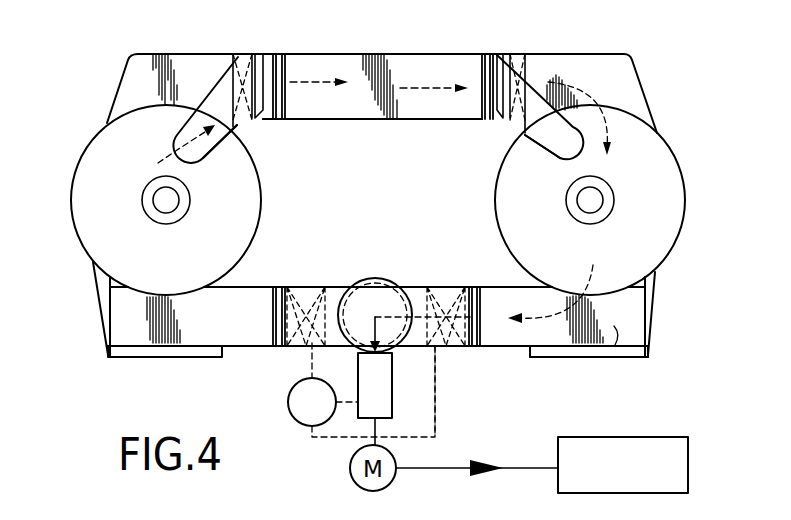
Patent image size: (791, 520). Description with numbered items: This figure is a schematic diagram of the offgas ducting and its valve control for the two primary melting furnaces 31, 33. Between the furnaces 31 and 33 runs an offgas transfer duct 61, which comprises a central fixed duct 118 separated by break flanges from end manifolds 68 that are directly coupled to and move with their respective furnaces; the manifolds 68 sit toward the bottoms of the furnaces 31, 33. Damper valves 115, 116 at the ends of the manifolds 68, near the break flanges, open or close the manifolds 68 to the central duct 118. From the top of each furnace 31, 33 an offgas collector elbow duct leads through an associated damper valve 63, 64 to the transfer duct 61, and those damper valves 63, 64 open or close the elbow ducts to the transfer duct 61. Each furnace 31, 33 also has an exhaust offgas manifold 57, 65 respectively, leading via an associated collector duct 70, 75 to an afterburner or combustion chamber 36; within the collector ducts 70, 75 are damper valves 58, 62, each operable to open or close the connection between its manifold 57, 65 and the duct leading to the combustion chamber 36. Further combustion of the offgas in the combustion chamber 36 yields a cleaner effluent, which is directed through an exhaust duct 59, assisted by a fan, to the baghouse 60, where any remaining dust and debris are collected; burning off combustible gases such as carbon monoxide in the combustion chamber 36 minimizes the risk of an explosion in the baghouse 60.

The primary melting furnace 31 is at (72, 207).
The primary melting furnace 33 is at (677, 213).
The combustion chamber 36 is at (373, 303).
The exhaust offgas manifold 57 is at (197, 347).
The damper valve 58 is at (290, 287).
The exhaust duct 59 is at (380, 380).
The baghouse 60 is at (663, 447).
The offgas transfer duct 61 is at (362, 63).
The damper valve 62 is at (460, 287).
The damper valve 63 is at (240, 126).
The damper valve 64 is at (515, 125).
The exhaust offgas manifold 65 is at (615, 347).
The end manifold 68 is at (125, 88).
The collector duct 70 is at (310, 350).
The collector duct 75 is at (468, 350).
The damper valve 115 is at (245, 54).
The damper valve 116 is at (512, 58).
The central fixed duct 118 is at (350, 120).